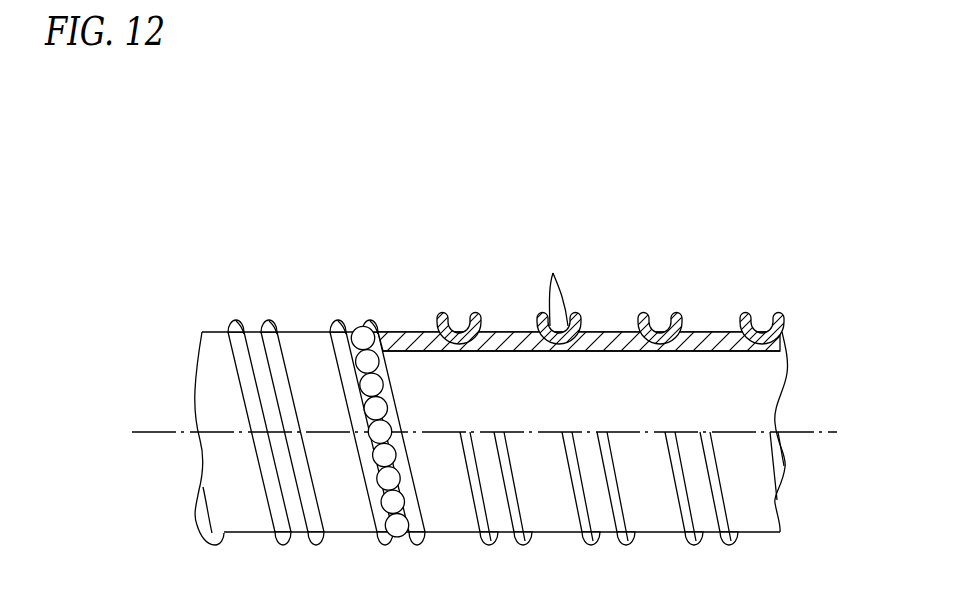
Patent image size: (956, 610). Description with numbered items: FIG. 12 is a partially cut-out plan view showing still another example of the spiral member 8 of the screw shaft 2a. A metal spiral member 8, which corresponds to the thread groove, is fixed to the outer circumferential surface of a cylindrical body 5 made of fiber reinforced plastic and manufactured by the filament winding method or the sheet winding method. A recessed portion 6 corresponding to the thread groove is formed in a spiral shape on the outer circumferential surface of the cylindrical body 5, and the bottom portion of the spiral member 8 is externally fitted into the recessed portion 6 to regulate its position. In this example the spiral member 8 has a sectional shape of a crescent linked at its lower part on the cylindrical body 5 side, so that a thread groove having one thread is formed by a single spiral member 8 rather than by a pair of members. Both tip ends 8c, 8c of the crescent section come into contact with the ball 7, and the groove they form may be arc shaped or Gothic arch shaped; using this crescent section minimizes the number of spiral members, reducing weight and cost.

The ball screw shaft 2a is at (437, 242).
The cylindrical body 5 is at (495, 340).
The recessed portion 6 is at (550, 351).
The ball 7 is at (358, 330).
The spiral member 8 is at (577, 317).
The tip end 8c is at (553, 288).